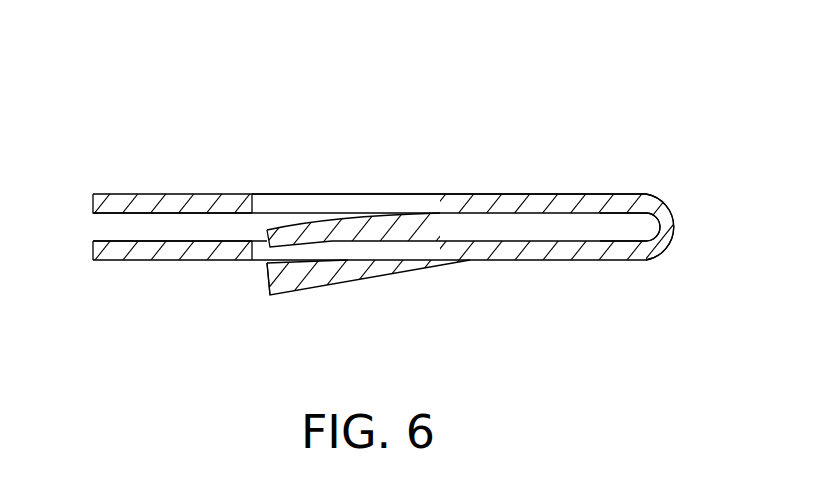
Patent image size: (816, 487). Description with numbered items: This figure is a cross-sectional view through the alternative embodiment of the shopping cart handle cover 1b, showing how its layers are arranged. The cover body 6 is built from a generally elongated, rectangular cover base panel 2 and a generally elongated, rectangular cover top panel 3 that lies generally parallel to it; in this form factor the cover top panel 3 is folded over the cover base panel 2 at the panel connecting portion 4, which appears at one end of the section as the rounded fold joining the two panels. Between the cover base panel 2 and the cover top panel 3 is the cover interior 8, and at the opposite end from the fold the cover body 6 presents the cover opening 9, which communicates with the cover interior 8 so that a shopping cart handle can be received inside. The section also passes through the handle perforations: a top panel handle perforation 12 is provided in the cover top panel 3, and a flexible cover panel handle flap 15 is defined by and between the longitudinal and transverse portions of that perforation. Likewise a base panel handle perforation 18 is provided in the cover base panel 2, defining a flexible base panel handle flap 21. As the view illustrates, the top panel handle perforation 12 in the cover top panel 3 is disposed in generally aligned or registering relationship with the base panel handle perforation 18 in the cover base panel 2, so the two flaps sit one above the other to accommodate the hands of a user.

The shopping cart handle cover 1b is at (343, 83).
The cover base panel 2 is at (125, 263).
The cover top panel 3 is at (550, 193).
The panel connecting portion 4 is at (680, 226).
The cover body 6 is at (123, 187).
The cover interior 8 is at (623, 239).
The cover opening 9 is at (92, 233).
The top panel handle perforation 12 is at (280, 187).
The cover panel handle flap 15 is at (313, 223).
The base panel handle perforation 18 is at (262, 272).
The base panel handle flap 21 is at (363, 278).